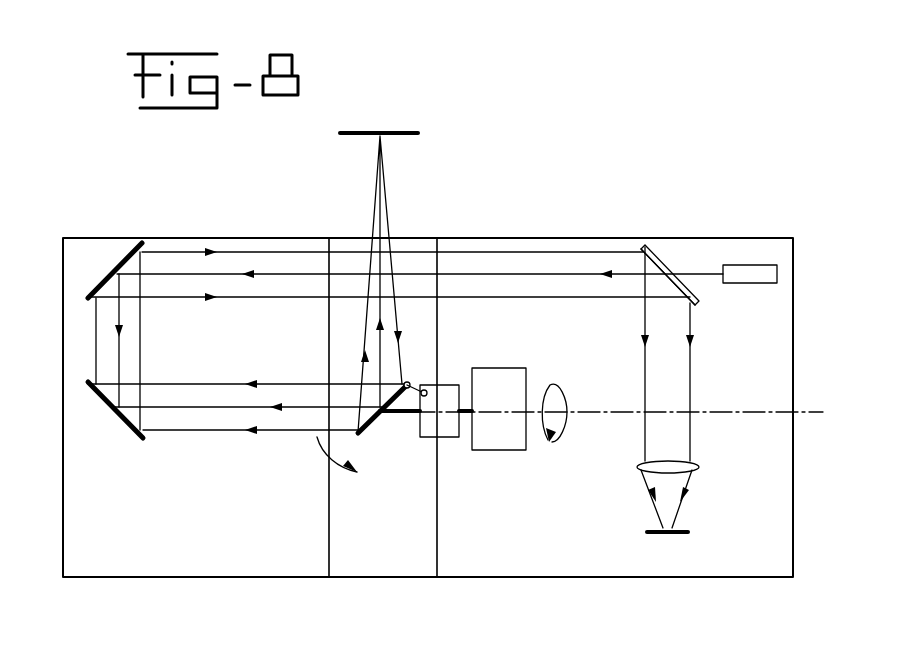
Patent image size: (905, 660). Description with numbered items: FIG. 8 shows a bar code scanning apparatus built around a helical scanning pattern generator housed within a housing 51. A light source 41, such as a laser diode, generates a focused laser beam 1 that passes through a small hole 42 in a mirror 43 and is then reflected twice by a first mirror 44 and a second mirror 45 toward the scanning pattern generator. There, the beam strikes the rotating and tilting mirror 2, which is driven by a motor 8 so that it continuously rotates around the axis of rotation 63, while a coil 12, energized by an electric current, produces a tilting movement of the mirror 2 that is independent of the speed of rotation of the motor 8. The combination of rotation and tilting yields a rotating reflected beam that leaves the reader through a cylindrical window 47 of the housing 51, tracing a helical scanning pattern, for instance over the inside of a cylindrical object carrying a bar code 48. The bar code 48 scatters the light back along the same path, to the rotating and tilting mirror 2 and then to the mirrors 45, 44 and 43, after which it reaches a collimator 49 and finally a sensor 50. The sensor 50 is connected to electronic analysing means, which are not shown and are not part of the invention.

The laser beam 1 is at (200, 408).
The mirror 2 is at (368, 437).
The motor 8 is at (500, 435).
The coil 12 is at (438, 428).
The light source 41 is at (748, 272).
The small hole 42 is at (672, 262).
The mirror 43 is at (640, 248).
The mirror 44 is at (117, 250).
The mirror 45 is at (90, 385).
The cylindrical window 47 is at (350, 237).
The bar code 48 is at (405, 130).
The collimator 49 is at (695, 462).
The sensor 50 is at (678, 533).
The housing 51 is at (530, 578).
The axis of rotation 63 is at (807, 412).